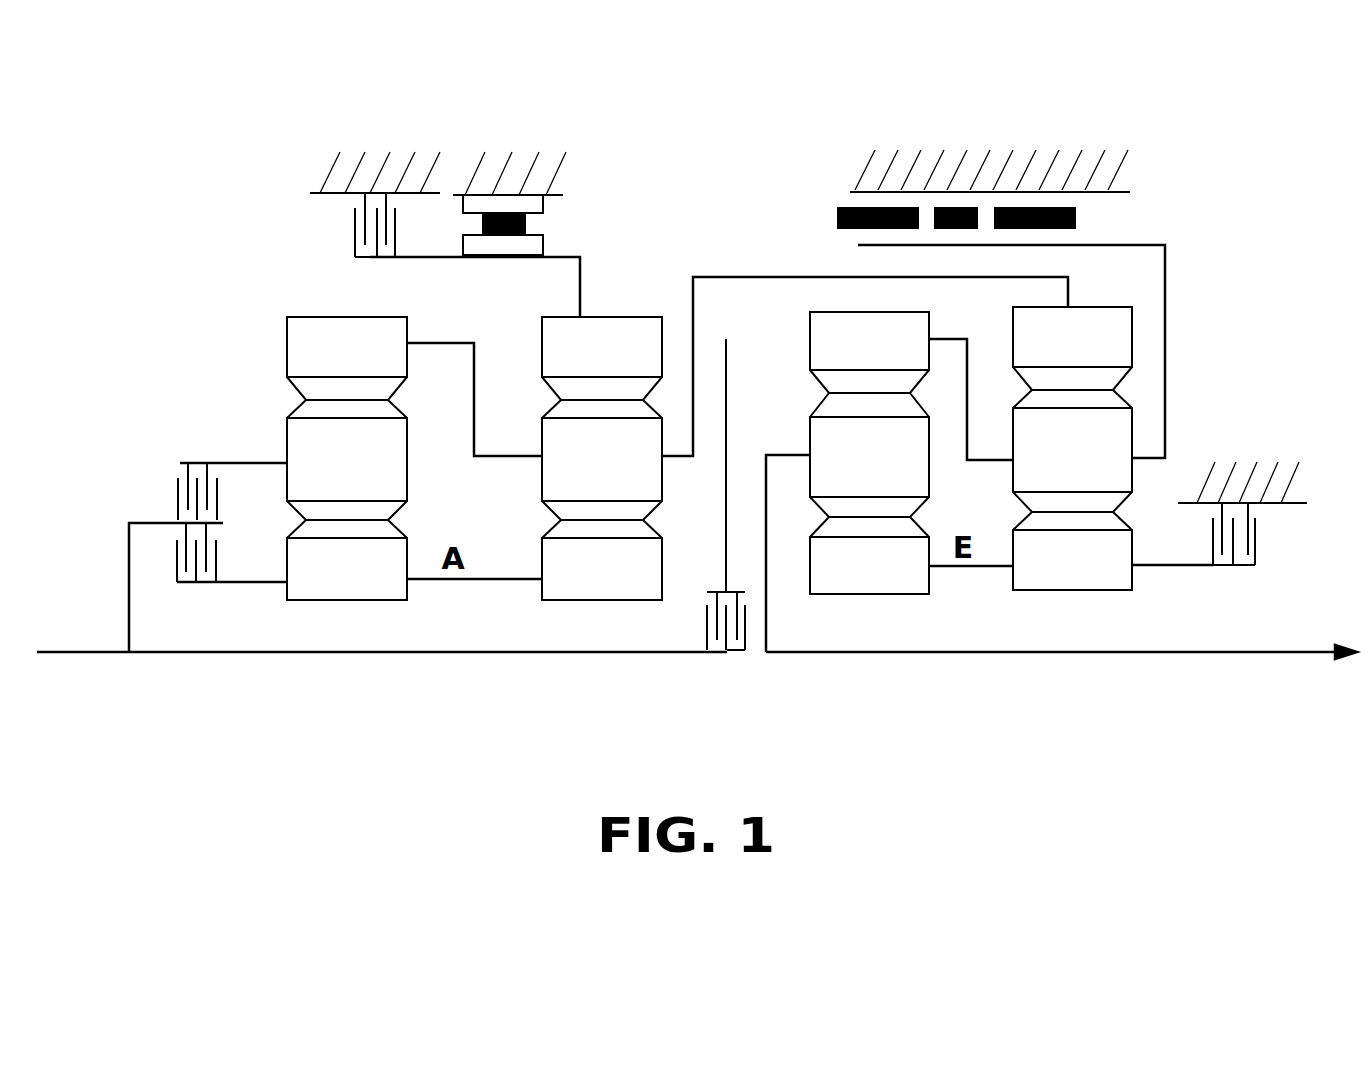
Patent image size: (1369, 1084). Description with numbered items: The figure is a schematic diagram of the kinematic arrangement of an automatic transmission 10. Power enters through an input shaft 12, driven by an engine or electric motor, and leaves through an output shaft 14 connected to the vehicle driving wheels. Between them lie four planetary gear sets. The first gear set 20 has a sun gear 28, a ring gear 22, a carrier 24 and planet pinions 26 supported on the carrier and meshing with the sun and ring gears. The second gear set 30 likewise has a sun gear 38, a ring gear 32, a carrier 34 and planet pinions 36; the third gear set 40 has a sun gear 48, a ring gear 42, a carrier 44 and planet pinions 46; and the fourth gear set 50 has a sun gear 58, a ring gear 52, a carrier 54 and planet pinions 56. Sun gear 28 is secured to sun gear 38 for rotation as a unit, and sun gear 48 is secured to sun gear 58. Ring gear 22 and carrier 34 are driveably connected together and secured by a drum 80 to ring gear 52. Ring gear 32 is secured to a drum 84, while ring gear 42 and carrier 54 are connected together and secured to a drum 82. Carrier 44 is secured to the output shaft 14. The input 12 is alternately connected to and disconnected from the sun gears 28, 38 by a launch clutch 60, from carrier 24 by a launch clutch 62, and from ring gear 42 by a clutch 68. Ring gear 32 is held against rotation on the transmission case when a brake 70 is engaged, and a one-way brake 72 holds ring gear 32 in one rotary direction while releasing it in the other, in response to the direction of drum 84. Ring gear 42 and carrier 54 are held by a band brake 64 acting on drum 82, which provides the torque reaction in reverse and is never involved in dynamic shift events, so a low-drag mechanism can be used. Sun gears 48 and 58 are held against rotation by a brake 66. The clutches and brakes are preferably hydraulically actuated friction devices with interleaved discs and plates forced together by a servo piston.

The automatic transmission 10 is at (657, 226).
The input shaft 12 is at (85, 652).
The output shaft 14 is at (1250, 648).
The first gear set 20 is at (332, 473).
The ring gear 22 is at (303, 333).
The carrier 24 is at (208, 463).
The planet pinions 26 is at (347, 459).
The sun gear 28 is at (395, 585).
The second gear set 30 is at (584, 473).
The ring gear 32 is at (563, 335).
The carrier 34 is at (512, 460).
The planet pinions 36 is at (602, 459).
The sun gear 38 is at (652, 585).
The third gear set 40 is at (852, 475).
The ring gear 42 is at (828, 340).
The carrier 44 is at (790, 460).
The planet pinions 46 is at (869, 457).
The sun gear 48 is at (905, 580).
The fourth gear set 50 is at (1082, 401).
The ring gear 52 is at (1035, 325).
The carrier 54 is at (1000, 462).
The planet pinions 56 is at (1072, 450).
The sun gear 58 is at (1112, 578).
The launch clutch 60 is at (192, 565).
The launch clutch 62 is at (190, 505).
The band brake 64 is at (838, 218).
The brake 66 is at (1238, 530).
The clutch 68 is at (720, 618).
The brake 70 is at (375, 232).
The one-way brake 72 is at (535, 205).
The drum 80 is at (785, 277).
The drum 82 is at (1125, 247).
The drum 84 is at (450, 257).